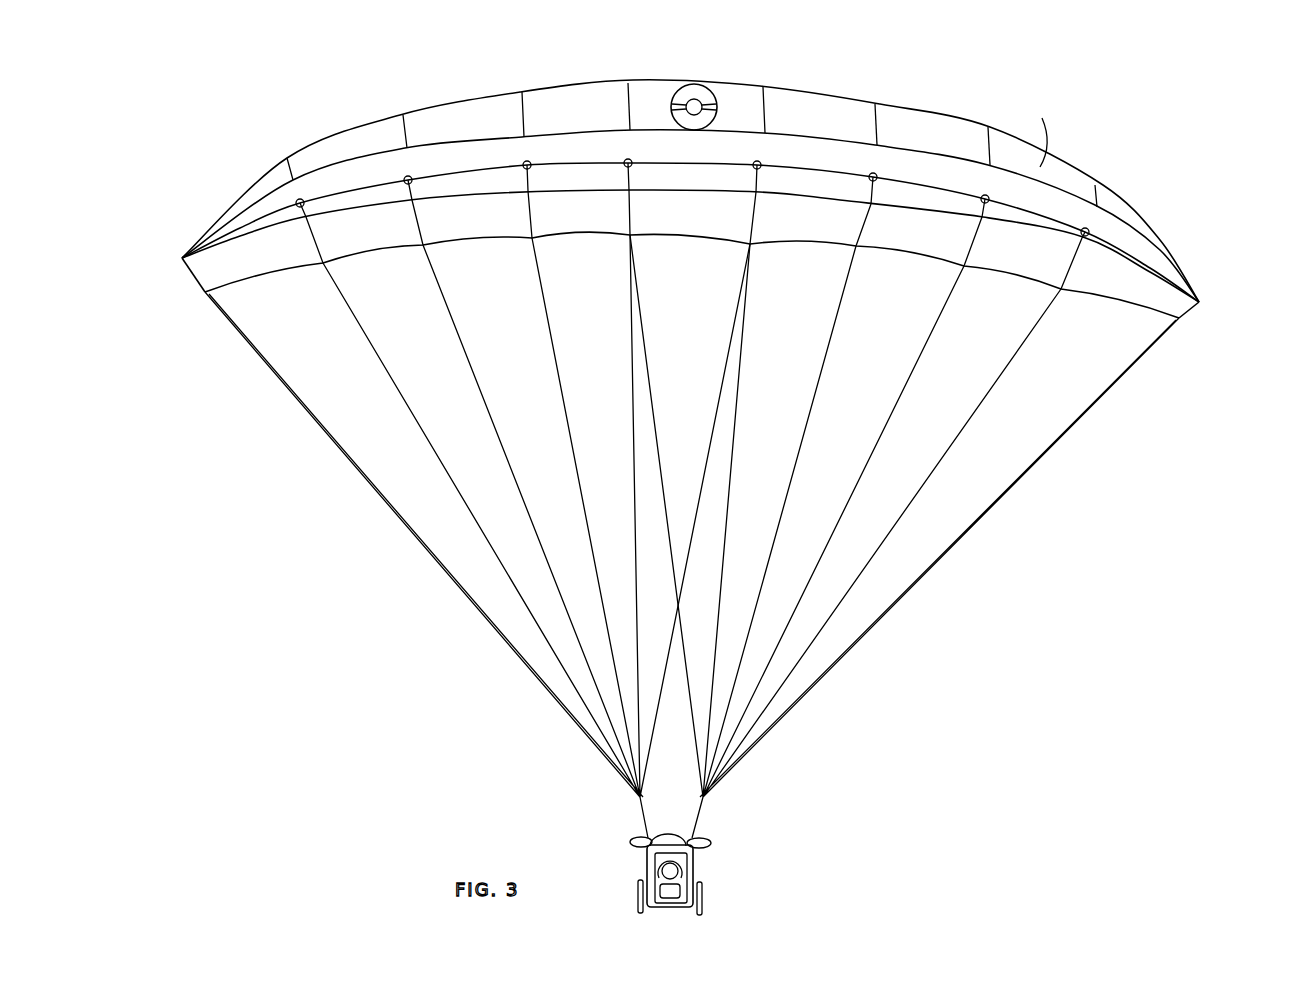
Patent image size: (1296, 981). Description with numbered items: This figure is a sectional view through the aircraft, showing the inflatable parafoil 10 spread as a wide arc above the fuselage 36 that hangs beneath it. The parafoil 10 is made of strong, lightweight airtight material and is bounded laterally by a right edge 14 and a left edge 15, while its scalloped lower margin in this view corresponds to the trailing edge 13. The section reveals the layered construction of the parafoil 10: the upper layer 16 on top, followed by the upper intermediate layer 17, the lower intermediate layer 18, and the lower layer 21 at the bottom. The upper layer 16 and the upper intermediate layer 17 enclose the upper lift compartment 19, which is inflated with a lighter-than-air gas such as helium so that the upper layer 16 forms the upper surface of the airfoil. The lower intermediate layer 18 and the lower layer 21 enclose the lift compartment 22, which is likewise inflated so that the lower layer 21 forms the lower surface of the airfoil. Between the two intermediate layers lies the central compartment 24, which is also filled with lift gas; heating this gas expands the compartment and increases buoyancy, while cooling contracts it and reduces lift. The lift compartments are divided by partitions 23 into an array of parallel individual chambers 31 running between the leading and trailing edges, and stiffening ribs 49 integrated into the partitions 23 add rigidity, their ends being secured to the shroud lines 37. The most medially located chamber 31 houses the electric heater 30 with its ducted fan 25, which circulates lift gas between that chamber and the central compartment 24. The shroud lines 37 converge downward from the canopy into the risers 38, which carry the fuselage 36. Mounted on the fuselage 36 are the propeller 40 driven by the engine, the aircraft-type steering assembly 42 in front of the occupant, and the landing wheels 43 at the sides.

The inflatable parafoil 10 is at (312, 133).
The trailing edge 13 is at (585, 231).
The right edge 14 is at (182, 259).
The left edge 15 is at (1199, 302).
The upper layer 16 is at (853, 100).
The upper intermediate layer 17 is at (907, 147).
The lower intermediate layer 18 is at (460, 168).
The upper lift compartment 19 is at (962, 142).
The lower layer 21 is at (815, 198).
The lift compartment 22 is at (590, 183).
The partitions 23 is at (522, 115).
The central compartment 24 is at (633, 153).
The ducted fan 25 is at (685, 102).
The electric heater 30 is at (698, 92).
The individual chambers 31 is at (740, 107).
The fuselage 36 is at (704, 873).
The shroud lines 37 is at (384, 502).
The risers 38 is at (703, 800).
The propeller 40 is at (690, 843).
The steering assembly 42 is at (662, 865).
The landing wheels 43 is at (703, 900).
The stiffening ribs 49 is at (524, 169).